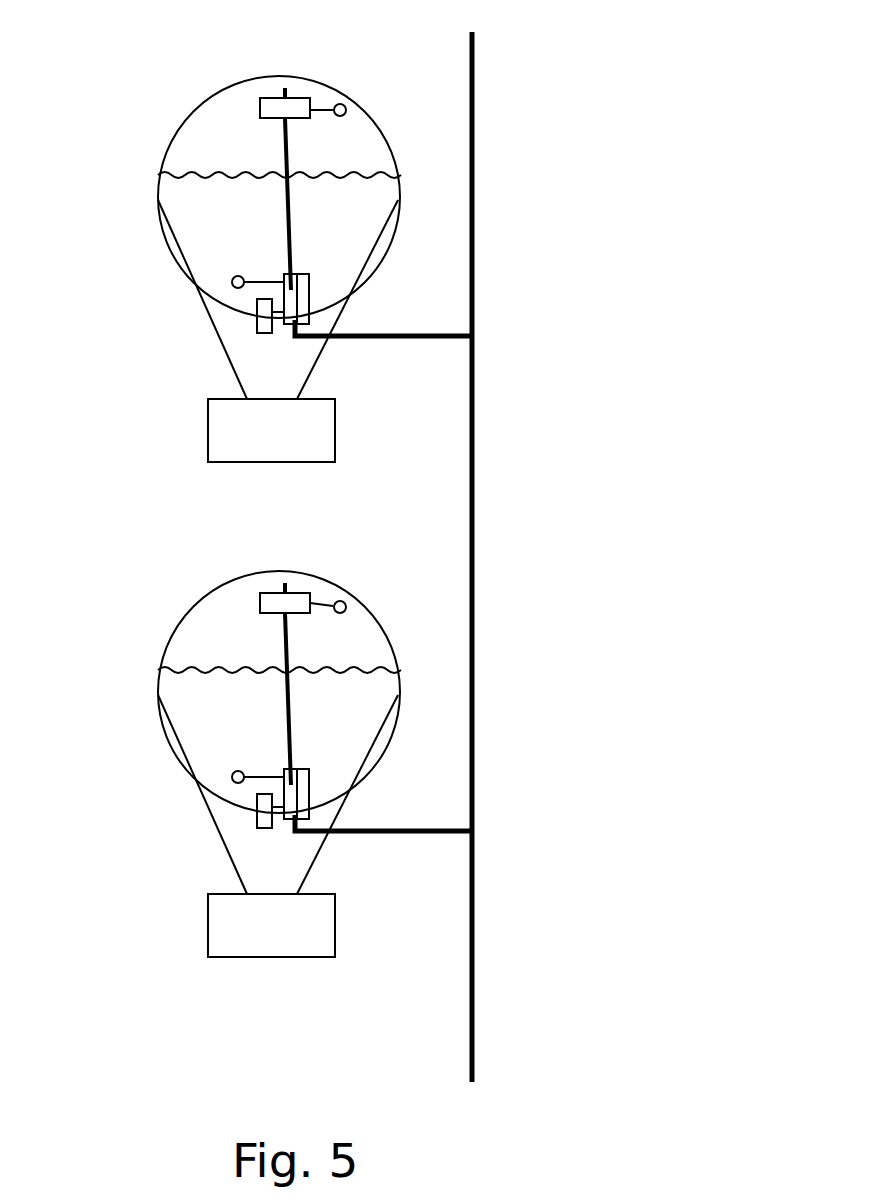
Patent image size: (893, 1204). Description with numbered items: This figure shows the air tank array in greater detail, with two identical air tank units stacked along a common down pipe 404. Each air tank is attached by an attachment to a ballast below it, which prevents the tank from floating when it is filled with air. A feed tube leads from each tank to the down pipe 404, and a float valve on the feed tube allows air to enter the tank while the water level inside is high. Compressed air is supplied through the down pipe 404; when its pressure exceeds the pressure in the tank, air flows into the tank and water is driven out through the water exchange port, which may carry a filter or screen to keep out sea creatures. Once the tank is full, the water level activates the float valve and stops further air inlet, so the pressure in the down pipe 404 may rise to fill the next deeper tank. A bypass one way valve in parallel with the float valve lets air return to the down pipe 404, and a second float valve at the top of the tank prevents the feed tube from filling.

The down pipe 404 is at (473, 127).